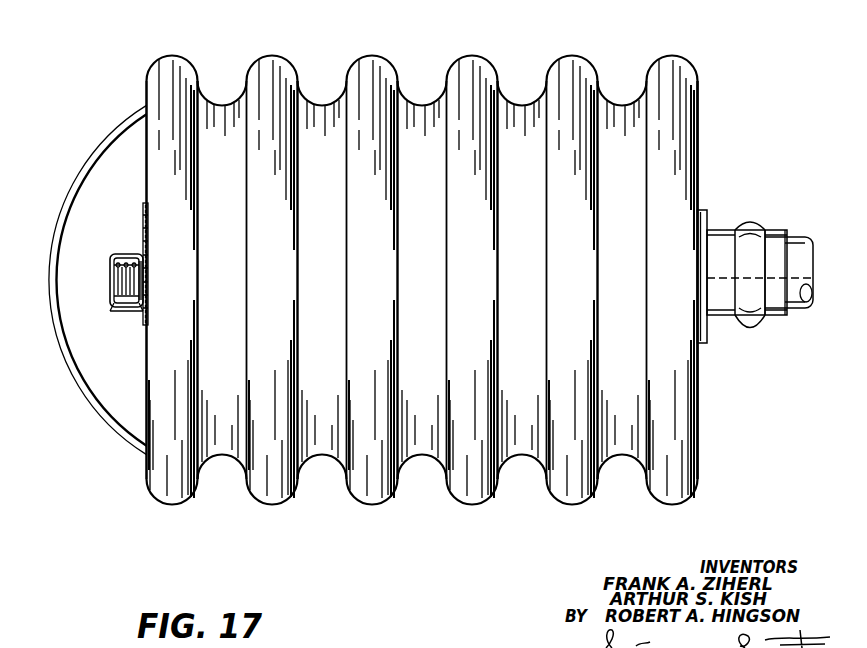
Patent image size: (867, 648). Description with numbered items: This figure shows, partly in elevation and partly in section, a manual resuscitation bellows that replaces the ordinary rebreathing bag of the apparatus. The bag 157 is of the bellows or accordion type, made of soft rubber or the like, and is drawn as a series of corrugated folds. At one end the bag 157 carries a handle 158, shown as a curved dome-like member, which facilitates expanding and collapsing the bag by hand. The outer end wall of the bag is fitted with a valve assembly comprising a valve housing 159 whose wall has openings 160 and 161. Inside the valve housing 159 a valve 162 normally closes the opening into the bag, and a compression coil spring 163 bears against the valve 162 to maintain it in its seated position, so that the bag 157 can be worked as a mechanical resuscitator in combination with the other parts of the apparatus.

The bag 157 is at (473, 504).
The handle 158 is at (101, 412).
The valve housing 159 is at (112, 306).
The opening 160 is at (128, 254).
The opening 161 is at (138, 315).
The valve 162 is at (143, 282).
The compression coil spring 163 is at (112, 283).